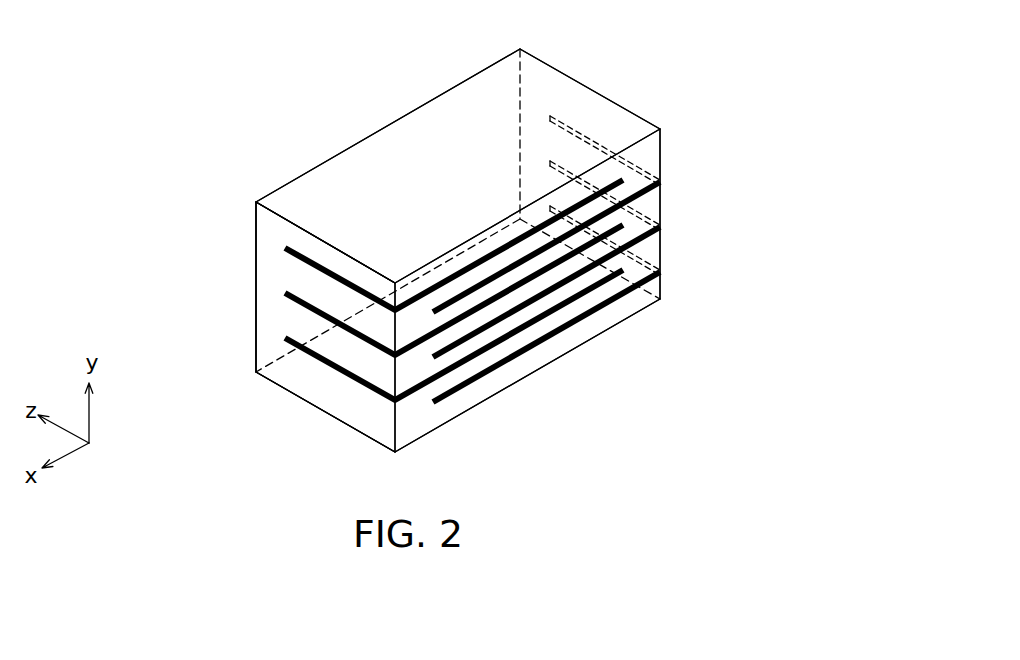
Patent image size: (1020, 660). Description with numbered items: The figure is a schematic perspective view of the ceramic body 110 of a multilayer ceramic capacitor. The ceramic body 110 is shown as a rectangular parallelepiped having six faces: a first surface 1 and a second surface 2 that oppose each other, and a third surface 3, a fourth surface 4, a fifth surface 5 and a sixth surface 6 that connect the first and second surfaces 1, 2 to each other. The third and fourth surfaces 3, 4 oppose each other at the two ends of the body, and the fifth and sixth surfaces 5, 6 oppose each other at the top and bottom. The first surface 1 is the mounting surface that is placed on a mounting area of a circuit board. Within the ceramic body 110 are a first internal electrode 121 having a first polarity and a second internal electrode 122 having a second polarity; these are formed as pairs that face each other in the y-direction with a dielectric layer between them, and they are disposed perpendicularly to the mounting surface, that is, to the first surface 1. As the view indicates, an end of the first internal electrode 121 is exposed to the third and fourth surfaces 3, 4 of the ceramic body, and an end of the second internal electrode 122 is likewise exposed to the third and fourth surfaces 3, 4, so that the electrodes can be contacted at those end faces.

The first surface 1 is at (572, 337).
The second surface 2 is at (328, 205).
The third surface 3 is at (265, 322).
The fourth surface 4 is at (567, 112).
The fifth surface 5 is at (428, 137).
The sixth surface 6 is at (322, 395).
The ceramic body 110 is at (267, 250).
The first internal electrode 121 is at (296, 258).
The second internal electrode 122 is at (658, 184).